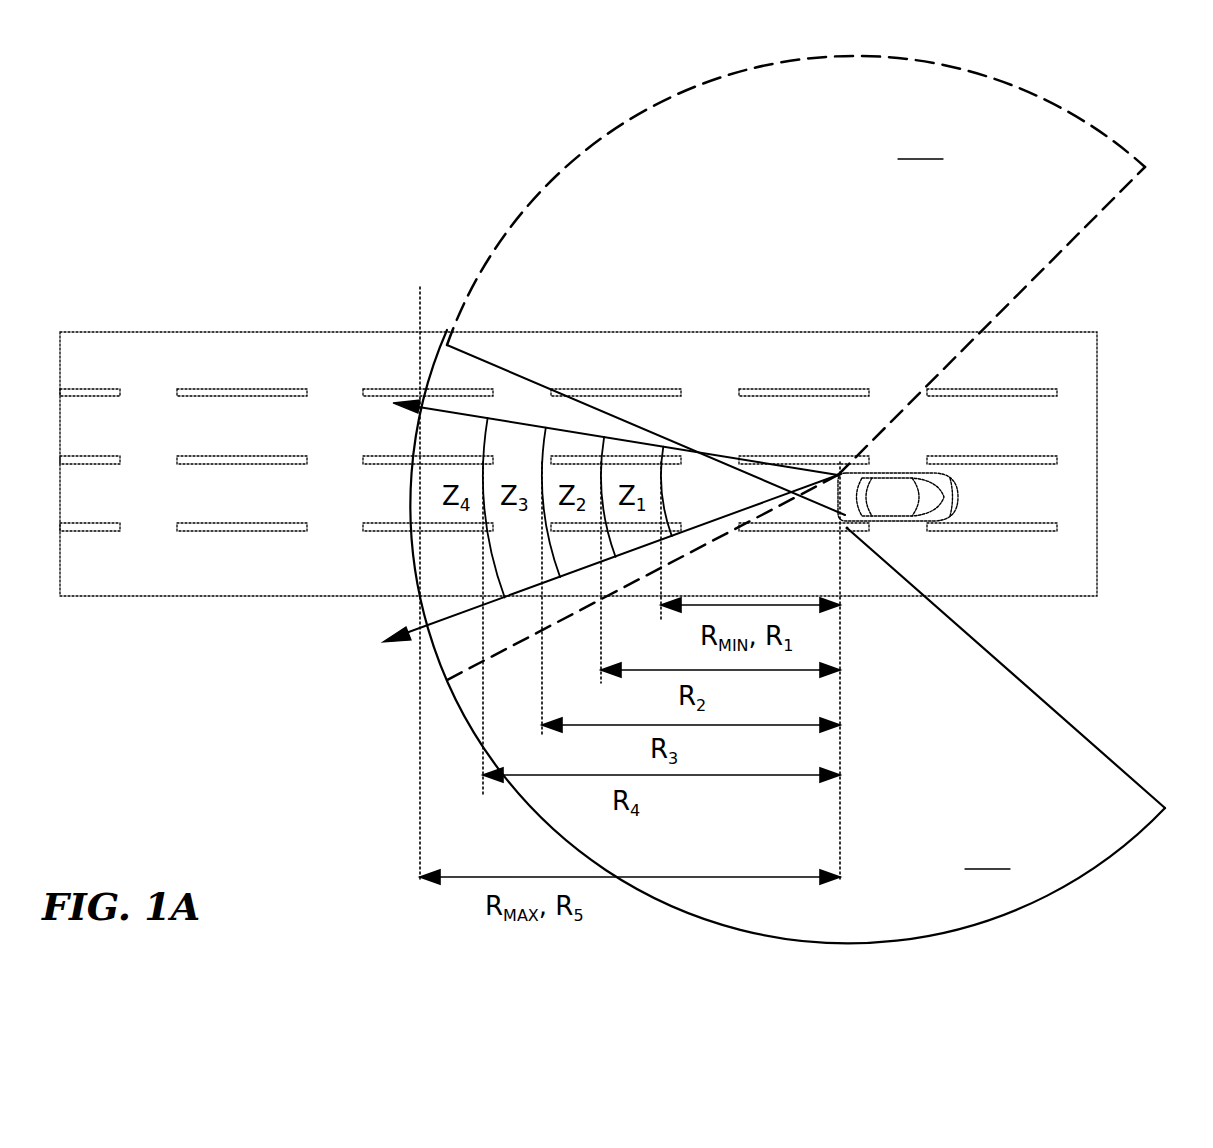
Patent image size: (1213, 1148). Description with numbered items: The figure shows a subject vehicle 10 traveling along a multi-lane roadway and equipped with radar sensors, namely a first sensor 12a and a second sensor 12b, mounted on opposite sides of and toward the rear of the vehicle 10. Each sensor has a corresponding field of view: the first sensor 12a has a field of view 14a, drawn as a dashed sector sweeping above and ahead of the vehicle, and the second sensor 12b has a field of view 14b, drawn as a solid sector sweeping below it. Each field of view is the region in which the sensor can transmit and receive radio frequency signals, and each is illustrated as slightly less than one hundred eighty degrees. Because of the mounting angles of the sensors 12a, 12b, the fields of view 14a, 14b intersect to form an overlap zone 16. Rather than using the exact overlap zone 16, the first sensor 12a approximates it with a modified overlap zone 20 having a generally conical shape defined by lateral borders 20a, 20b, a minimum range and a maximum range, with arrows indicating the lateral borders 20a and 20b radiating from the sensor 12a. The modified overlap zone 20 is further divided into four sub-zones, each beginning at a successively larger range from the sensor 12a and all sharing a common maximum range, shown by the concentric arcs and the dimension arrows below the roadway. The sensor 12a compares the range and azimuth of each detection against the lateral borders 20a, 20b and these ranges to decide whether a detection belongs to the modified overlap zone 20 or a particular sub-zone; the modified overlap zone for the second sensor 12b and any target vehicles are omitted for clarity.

The subject vehicle 10 is at (953, 514).
The first sensor 12a is at (838, 470).
The second sensor 12b is at (848, 532).
The field-of-view of first sensor 14a is at (1070, 112).
The field-of-view of second sensor 14b is at (1075, 883).
The overlap zone 16 is at (544, 416).
The modified overlap zone 20 is at (597, 432).
The first lateral border 20a is at (428, 403).
The second lateral border 20b is at (414, 640).